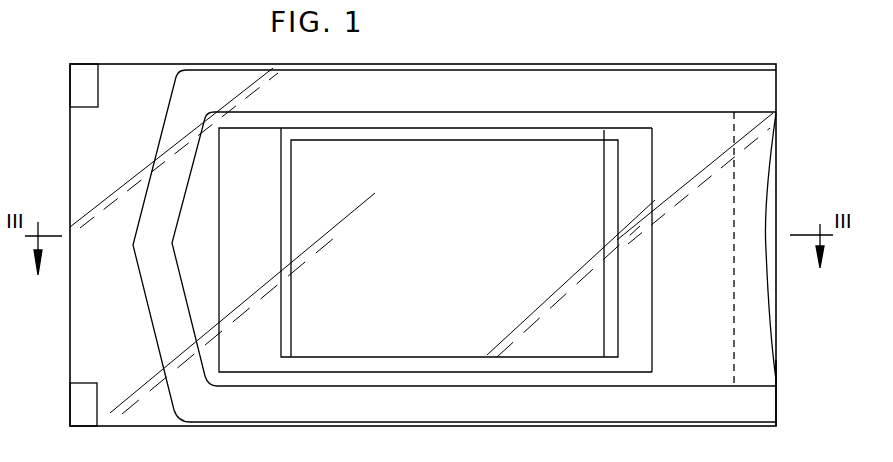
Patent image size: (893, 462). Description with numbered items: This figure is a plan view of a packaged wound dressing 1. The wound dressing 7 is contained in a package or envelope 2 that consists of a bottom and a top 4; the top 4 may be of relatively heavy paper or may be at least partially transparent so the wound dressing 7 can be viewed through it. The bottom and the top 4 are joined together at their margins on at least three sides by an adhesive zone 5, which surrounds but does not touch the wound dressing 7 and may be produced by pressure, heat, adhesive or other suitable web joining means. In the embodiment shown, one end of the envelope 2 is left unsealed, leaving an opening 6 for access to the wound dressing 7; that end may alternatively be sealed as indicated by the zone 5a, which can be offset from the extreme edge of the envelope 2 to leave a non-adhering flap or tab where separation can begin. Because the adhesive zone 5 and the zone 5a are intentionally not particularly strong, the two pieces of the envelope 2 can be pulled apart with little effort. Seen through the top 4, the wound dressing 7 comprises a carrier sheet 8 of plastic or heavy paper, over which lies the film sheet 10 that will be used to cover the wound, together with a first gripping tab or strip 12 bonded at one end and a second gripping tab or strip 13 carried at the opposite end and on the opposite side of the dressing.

The packaged wound dressing 1 is at (195, 431).
The package or envelope 2 is at (133, 72).
The top 4 is at (724, 124).
The adhesive zone 5 is at (341, 415).
The zone 5a is at (760, 378).
The opening 6 is at (774, 222).
The wound dressing 7 is at (662, 268).
The carrier sheet 8 is at (306, 134).
The film sheet 10 is at (424, 160).
The first gripping tab or strip 12 is at (220, 232).
The second gripping tab or strip 13 is at (648, 154).